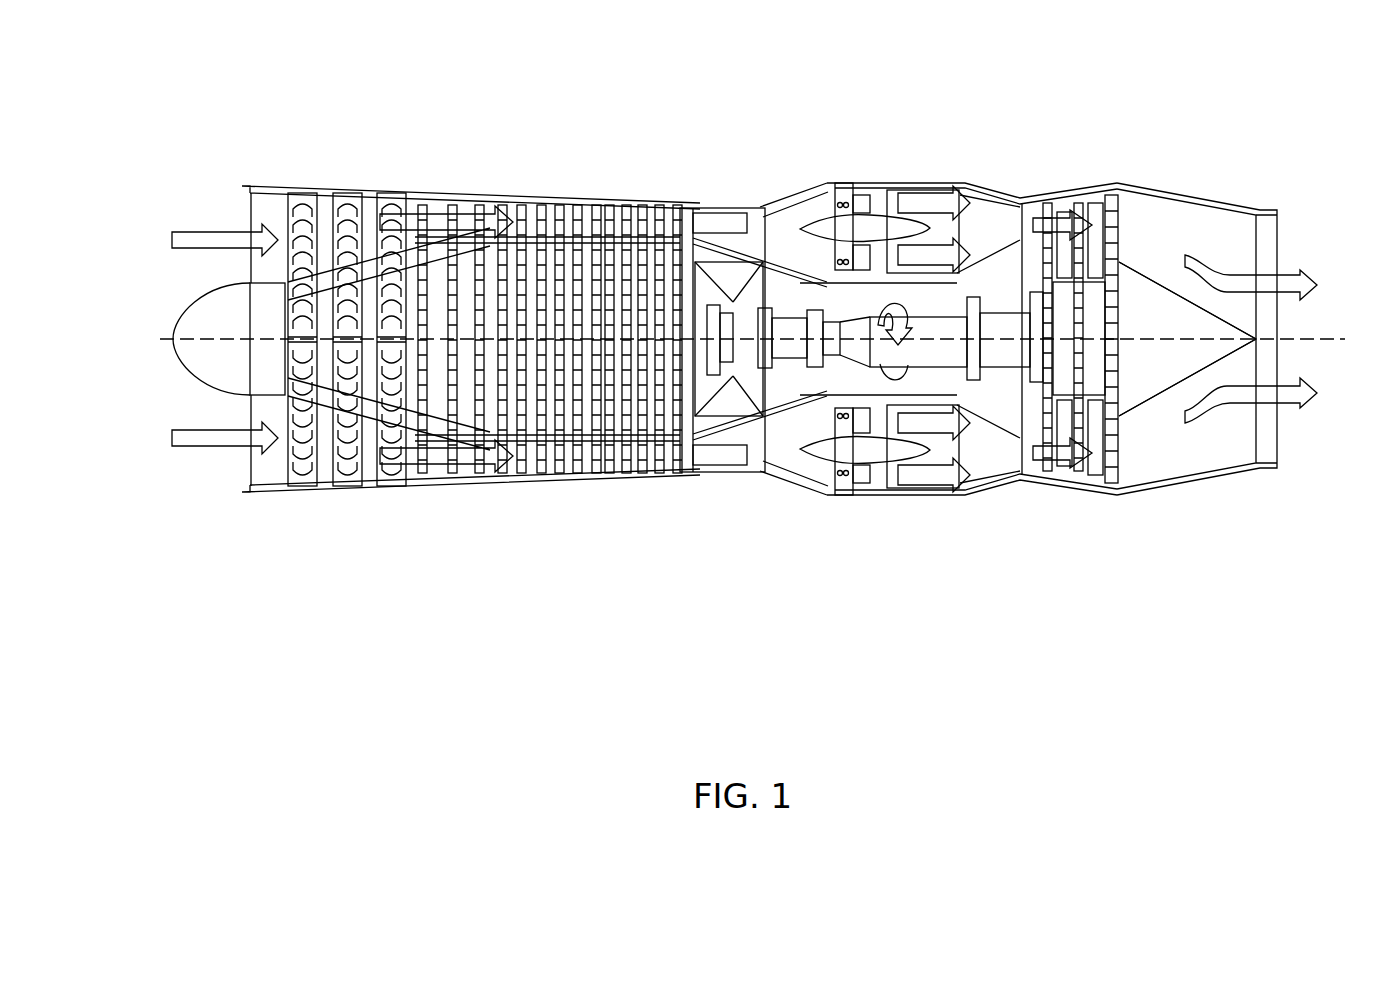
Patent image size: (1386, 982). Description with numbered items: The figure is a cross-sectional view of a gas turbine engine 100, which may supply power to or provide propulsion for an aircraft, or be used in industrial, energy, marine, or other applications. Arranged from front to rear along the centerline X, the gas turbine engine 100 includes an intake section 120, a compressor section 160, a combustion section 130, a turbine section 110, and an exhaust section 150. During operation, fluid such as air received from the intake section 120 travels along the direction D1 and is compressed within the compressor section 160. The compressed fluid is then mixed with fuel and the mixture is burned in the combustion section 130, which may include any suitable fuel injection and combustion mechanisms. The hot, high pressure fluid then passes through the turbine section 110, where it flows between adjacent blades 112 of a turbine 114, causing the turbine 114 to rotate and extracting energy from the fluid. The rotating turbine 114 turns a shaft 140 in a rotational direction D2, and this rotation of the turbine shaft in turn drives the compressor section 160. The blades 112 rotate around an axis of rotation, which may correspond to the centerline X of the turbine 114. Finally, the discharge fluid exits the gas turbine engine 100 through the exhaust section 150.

The gas turbine engine 100 is at (801, 548).
The turbine section 110 is at (1103, 182).
The blades 112 is at (1121, 305).
The turbine 114 is at (1135, 360).
The intake section 120 is at (226, 474).
The combustion section 130 is at (988, 211).
The shaft 140 is at (945, 343).
The exhaust section 150 is at (1272, 255).
The compressor section 160 is at (537, 200).
The direction D1 is at (188, 240).
The rotational direction D2 is at (882, 292).
The centerline X is at (765, 340).